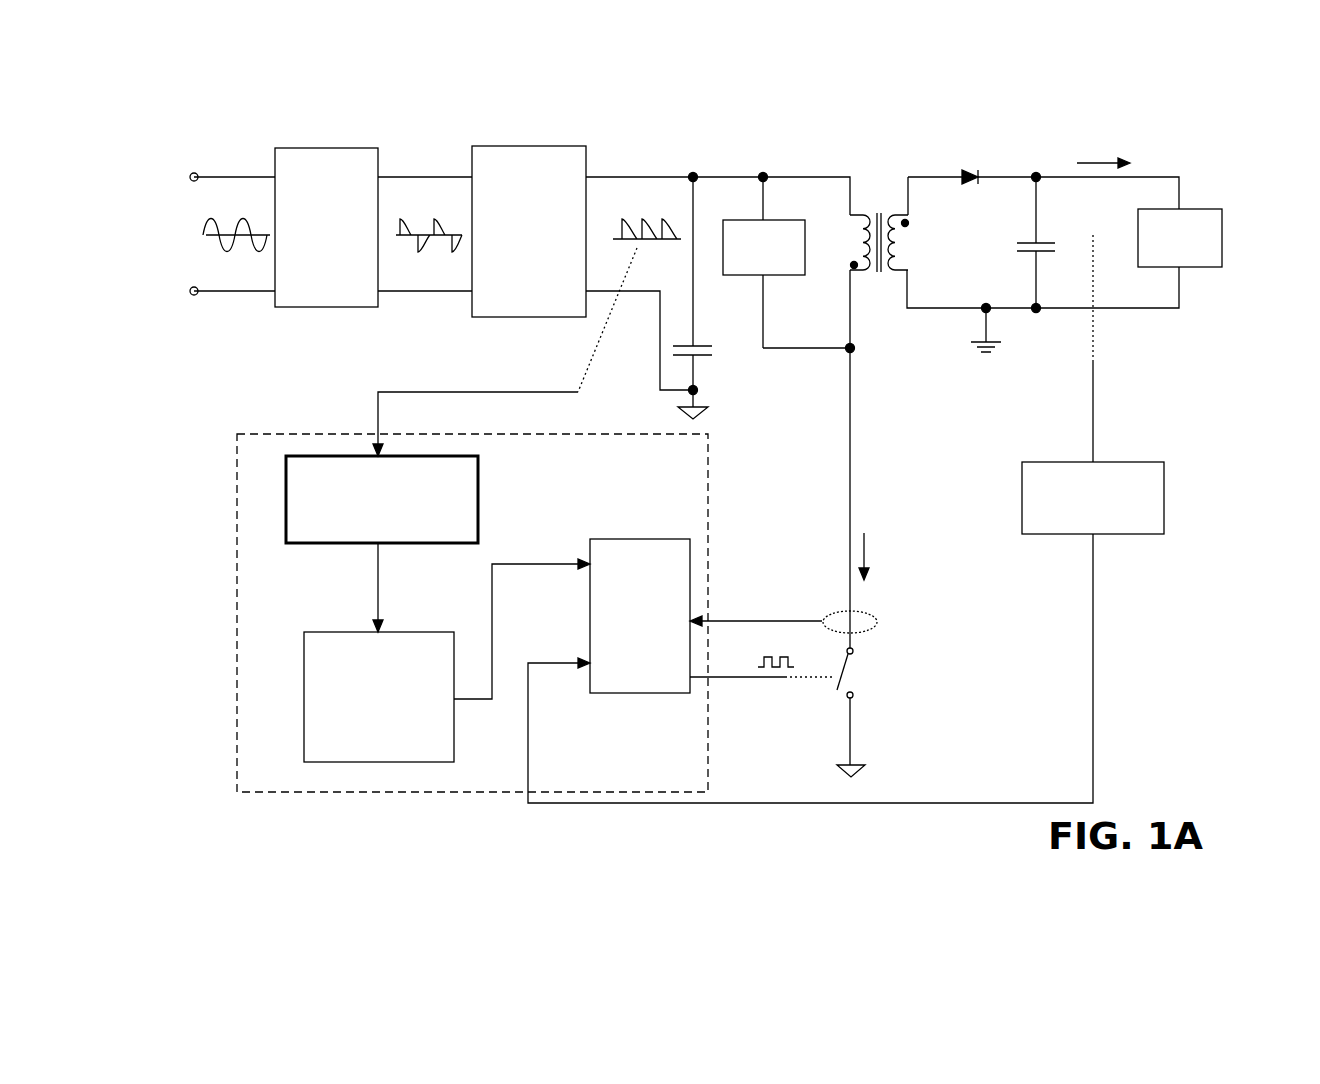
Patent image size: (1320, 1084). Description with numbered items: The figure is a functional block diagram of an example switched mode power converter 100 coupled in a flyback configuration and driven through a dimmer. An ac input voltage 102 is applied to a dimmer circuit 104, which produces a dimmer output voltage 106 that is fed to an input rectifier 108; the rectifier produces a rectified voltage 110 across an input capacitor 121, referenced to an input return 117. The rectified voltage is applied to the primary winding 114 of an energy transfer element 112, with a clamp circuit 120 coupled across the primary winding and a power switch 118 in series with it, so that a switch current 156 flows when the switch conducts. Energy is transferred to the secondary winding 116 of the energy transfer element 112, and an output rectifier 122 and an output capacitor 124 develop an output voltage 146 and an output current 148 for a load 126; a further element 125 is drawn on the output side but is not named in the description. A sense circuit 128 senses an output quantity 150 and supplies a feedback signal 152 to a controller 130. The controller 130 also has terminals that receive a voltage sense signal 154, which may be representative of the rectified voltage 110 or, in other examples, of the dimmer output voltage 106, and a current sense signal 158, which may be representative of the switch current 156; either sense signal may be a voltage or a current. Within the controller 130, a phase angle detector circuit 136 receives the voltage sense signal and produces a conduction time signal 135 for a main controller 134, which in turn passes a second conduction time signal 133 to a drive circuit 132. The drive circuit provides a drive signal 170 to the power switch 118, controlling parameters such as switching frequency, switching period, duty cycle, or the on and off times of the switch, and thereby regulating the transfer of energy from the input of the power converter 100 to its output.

The power converter 100 is at (1209, 108).
The ac input voltage 102 is at (173, 224).
The dimmer circuit 104 is at (318, 142).
The dimmer output voltage 106 is at (428, 185).
The input rectifier 108 is at (515, 142).
The rectified voltage 110 is at (628, 187).
The energy transfer element 112 is at (886, 277).
The primary winding 114 is at (858, 245).
The secondary winding 116 is at (905, 245).
The input return 117 is at (708, 405).
The switch 118 is at (883, 660).
The clamp circuit 120 is at (777, 284).
The input capacitor 121 is at (715, 338).
The output rectifier 122 is at (967, 162).
The output capacitor 124 is at (1010, 260).
The output return 125 is at (995, 322).
The load 126 is at (1193, 202).
The sense circuit 128 is at (1168, 495).
The controller 130 is at (250, 797).
The drive circuit 132 is at (687, 536).
The conduction time signal 133 is at (552, 566).
The main controller 134 is at (298, 668).
The conduction time signal 135 is at (385, 596).
The phase angle detector circuit 136 is at (485, 473).
The output voltage 146 is at (1082, 227).
The output current 148 is at (1100, 132).
The output quantity 150 is at (1120, 353).
The feedback signal 152 is at (1140, 615).
The voltage sense signal 154 is at (365, 368).
The switch current 156 is at (885, 537).
The current sense signal 158 is at (785, 562).
The drive signal 170 is at (795, 733).